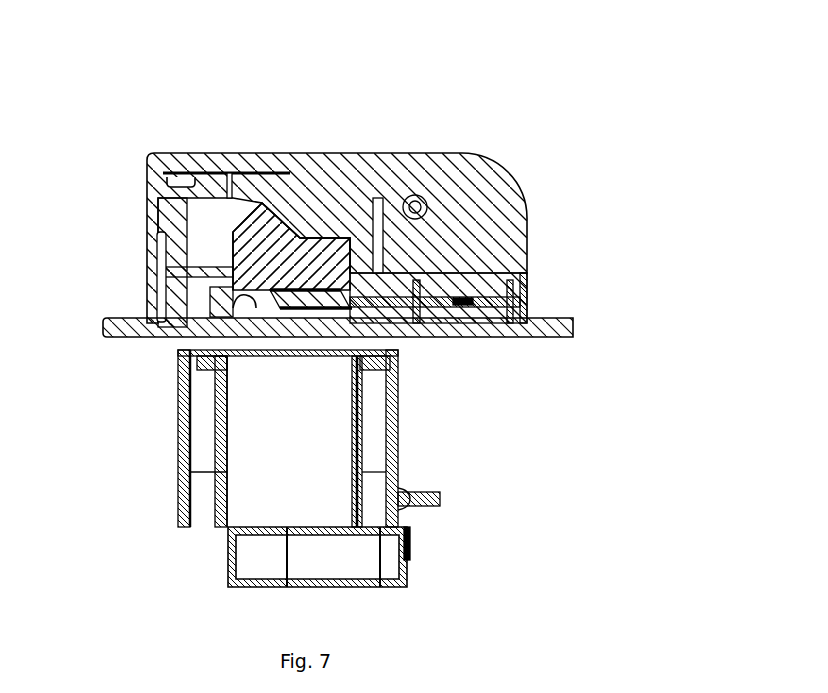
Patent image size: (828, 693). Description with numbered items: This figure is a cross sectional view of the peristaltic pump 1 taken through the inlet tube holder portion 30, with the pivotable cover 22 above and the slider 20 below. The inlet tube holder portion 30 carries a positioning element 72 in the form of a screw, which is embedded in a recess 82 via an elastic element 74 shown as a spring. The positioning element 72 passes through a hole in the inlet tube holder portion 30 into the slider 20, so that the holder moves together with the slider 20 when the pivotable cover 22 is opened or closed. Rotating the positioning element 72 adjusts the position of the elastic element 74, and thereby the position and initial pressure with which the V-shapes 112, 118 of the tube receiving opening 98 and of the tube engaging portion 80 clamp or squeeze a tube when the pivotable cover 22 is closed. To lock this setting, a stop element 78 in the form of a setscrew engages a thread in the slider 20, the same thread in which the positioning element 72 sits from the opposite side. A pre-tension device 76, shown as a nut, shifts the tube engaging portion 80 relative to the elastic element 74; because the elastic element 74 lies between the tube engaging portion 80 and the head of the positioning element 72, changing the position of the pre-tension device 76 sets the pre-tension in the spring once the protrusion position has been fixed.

The peristaltic pump 1 is at (357, 120).
The slider 20 is at (483, 318).
The pivotable cover 22 is at (178, 160).
The inlet tube holder portion 30 is at (290, 260).
The positioning element 72 is at (355, 302).
The elastic element 74 is at (336, 290).
The pre-tension device 76 is at (348, 306).
The stop element 78 is at (472, 298).
The tube engaging portion 80 is at (247, 228).
The recess 82 is at (236, 305).
The tube receiving opening 98 is at (287, 227).
The V-shape 112 is at (267, 228).
The V-shape 118 is at (302, 230).